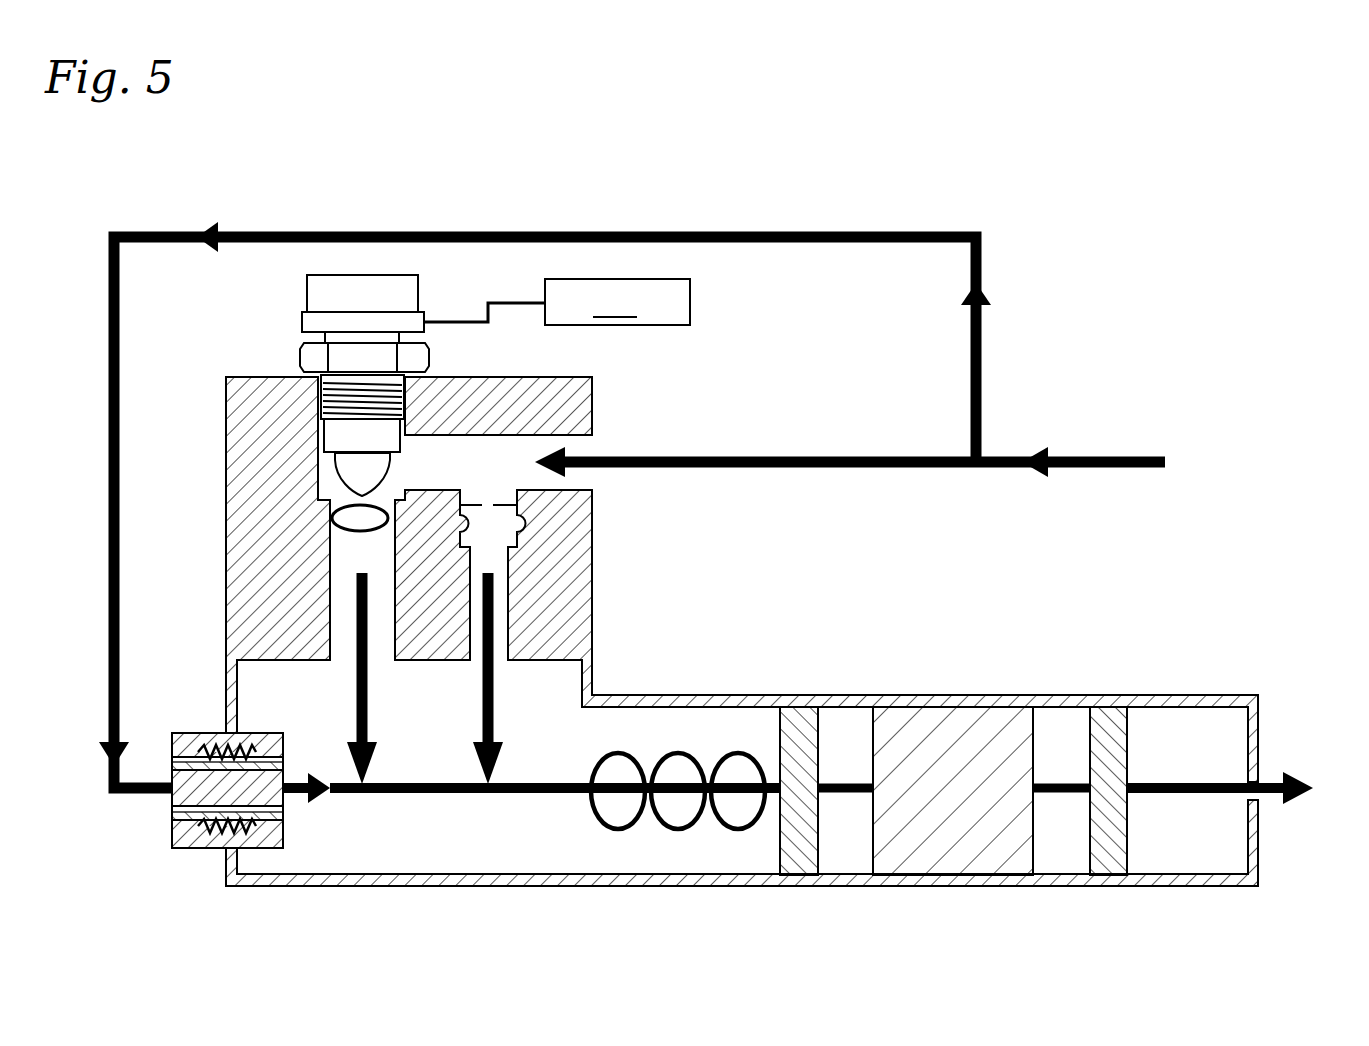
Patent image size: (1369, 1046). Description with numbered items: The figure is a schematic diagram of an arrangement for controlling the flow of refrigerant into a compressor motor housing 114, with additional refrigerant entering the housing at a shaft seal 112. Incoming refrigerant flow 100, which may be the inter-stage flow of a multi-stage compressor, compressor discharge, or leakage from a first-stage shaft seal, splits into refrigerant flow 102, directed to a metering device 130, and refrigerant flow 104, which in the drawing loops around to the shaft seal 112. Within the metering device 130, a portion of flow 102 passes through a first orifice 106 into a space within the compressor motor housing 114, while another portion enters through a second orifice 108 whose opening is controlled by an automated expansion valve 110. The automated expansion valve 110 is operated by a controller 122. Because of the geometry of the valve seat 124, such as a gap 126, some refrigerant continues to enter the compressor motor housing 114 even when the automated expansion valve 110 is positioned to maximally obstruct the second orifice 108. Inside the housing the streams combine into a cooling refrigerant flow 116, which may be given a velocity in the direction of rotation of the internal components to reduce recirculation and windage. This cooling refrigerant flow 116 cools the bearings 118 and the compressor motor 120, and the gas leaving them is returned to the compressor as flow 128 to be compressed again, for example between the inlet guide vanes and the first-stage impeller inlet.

The refrigerant flow 100 is at (1090, 457).
The refrigerant flow 102 is at (866, 457).
The refrigerant flow 104 is at (765, 232).
The first orifice 106 is at (487, 504).
The second orifice 108 is at (355, 517).
The automated expansion valve 110 is at (302, 325).
The shaft seal 112 is at (190, 848).
The compressor motor housing 114 is at (634, 695).
The cooling refrigerant flow 116 is at (560, 798).
The bearings 118 is at (780, 848).
The compressor motor 120 is at (873, 848).
The controller 122 is at (557, 302).
The valve seat 124 is at (349, 533).
The gap 126 is at (389, 533).
The flow 128 is at (1272, 800).
The metering device 130 is at (592, 405).